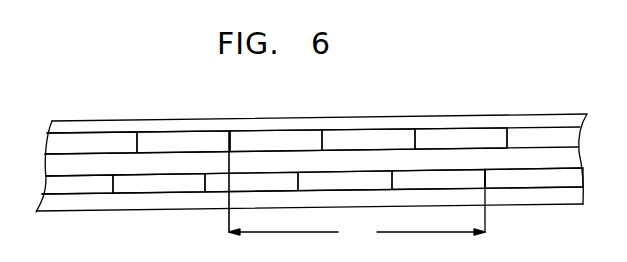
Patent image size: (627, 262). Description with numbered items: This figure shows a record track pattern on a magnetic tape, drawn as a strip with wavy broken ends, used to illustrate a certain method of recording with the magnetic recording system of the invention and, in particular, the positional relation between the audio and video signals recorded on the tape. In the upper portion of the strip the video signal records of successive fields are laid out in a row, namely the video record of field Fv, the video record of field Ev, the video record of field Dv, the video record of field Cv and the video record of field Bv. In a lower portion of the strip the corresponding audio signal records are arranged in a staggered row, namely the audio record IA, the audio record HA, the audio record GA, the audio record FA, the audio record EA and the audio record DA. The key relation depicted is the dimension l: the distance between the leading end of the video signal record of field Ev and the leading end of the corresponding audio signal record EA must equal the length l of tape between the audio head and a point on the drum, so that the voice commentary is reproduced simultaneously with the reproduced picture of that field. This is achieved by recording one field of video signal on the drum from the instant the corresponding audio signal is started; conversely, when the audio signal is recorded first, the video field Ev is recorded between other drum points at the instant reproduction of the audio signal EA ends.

The video signal record of field F Fv is at (113, 141).
The video signal record of field E Ev is at (203, 141).
The video signal record of field D Dv is at (300, 141).
The video signal record of field C Cv is at (388, 141).
The video signal record of field B Bv is at (483, 141).
The audio signal record of field I IA is at (73, 185).
The audio signal record of field H HA is at (148, 183).
The audio signal record of field G GA is at (218, 185).
The audio signal record of field F FA is at (353, 181).
The audio signal record of field E EA is at (467, 180).
The audio signal record of field D DA is at (558, 179).
The tape length between audio head and drum point l is at (357, 232).